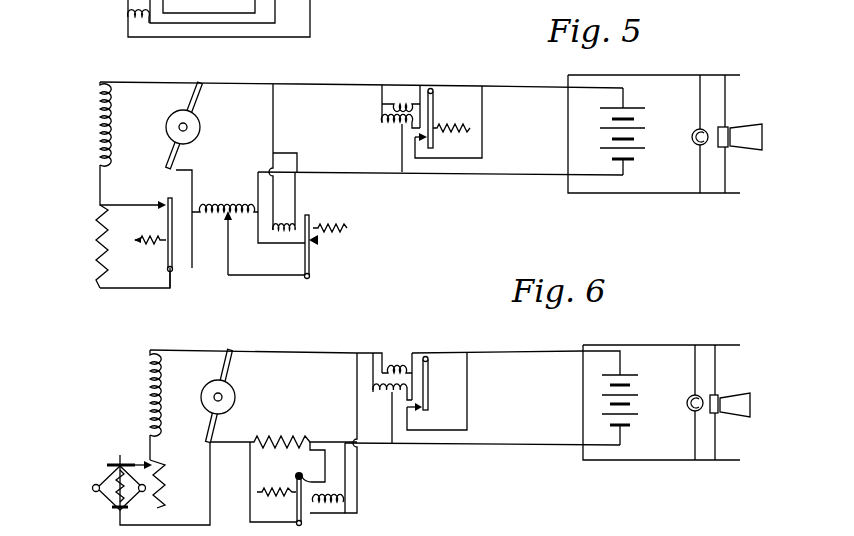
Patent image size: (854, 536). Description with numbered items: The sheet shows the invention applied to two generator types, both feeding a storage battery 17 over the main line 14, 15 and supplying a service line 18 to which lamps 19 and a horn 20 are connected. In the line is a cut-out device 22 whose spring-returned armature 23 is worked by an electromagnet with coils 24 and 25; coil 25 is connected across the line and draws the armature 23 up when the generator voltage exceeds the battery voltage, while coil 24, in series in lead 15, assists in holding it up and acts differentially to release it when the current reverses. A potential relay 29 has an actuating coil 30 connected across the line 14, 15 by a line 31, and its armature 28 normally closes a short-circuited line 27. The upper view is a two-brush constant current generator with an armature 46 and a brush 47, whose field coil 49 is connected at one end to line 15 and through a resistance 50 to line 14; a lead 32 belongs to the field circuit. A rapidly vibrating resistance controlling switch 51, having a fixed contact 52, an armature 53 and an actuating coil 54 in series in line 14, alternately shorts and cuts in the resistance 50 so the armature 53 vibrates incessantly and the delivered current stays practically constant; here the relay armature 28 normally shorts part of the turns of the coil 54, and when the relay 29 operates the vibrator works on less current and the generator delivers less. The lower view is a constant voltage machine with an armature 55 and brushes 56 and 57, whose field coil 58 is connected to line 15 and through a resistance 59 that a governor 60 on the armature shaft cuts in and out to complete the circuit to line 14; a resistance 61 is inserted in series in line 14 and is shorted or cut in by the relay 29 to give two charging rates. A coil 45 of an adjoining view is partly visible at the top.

In FIG. 5, the supply line 14 is at (175, 174).
In FIG. 6, the supply line 14 is at (513, 444).
In FIG. 5, the lead 15 is at (333, 84).
In FIG. 6, the lead 15 is at (497, 352).
In FIG. 5, the storage battery 17 is at (603, 117).
In FIG. 6, the storage battery 17 is at (605, 393).
In FIG. 5, the service line 18 is at (660, 75).
In FIG. 6, the service line 18 is at (652, 345).
In FIG. 5, the lamps 19 is at (693, 130).
In FIG. 6, the lamps 19 is at (688, 398).
In FIG. 5, the horn 20 is at (743, 128).
In FIG. 6, the horn 20 is at (733, 395).
In FIG. 5, the cut-out device 22 is at (434, 110).
In FIG. 6, the cut-out device 22 is at (416, 385).
In FIG. 5, the armature 23 is at (422, 120).
In FIG. 6, the armature 23 is at (428, 398).
In FIG. 5, the coil 24 is at (403, 103).
In FIG. 6, the coil 24 is at (398, 367).
In FIG. 5, the coil 25 is at (392, 128).
In FIG. 6, the coil 25 is at (388, 393).
In FIG. 5, the short-circuited line 27 is at (251, 277).
In FIG. 6, the short-circuited line 27 is at (250, 497).
In FIG. 5, the armature 28 is at (315, 249).
In FIG. 6, the armature 28 is at (295, 478).
In FIG. 5, the relay 29 is at (302, 262).
In FIG. 6, the relay 29 is at (305, 517).
In FIG. 5, the actuating coil 30 is at (283, 228).
In FIG. 6, the actuating coil 30 is at (342, 502).
In FIG. 5, the line 31 is at (280, 172).
In FIG. 6, the line 31 is at (350, 458).
In FIG. 5, the lead 32 is at (163, 82).
In FIG. 6, the lead 32 is at (184, 350).
In FIG. 5, the coil 45 is at (128, 17).
In FIG. 5, the armature 46 is at (203, 127).
In FIG. 5, the brush 47 is at (194, 92).
In FIG. 5, the field coil 49 is at (97, 107).
In FIG. 5, the resistance 50 is at (97, 246).
In FIG. 5, the resistance controlling switch 51 is at (160, 230).
In FIG. 5, the fixed contact 52 is at (163, 204).
In FIG. 5, the armature 53 is at (168, 253).
In FIG. 5, the actuating coil 54 is at (210, 210).
In FIG. 6, the armature 55 is at (235, 397).
In FIG. 6, the brush 56 is at (225, 360).
In FIG. 6, the brush 57 is at (227, 430).
In FIG. 6, the field coil 58 is at (150, 375).
In FIG. 6, the resistance 59 is at (157, 462).
In FIG. 6, the governor 60 is at (117, 478).
In FIG. 6, the resistance 61 is at (292, 440).